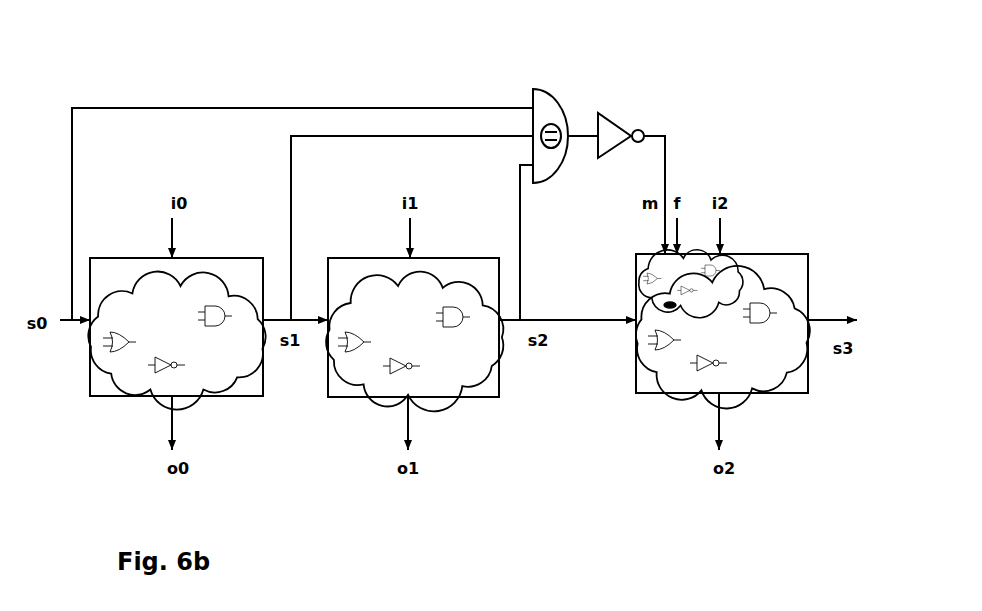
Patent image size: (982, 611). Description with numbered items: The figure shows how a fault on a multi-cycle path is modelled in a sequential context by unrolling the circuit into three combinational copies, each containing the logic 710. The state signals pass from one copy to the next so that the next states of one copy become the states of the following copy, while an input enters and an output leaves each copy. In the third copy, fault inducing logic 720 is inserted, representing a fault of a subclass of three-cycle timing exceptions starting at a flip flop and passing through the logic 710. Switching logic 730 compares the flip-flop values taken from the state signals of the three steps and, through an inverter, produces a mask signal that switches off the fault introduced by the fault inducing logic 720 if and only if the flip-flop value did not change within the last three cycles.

The logic 710 is at (805, 423).
The fault inducing logic 720 is at (677, 277).
The switching logic 730 is at (608, 137).